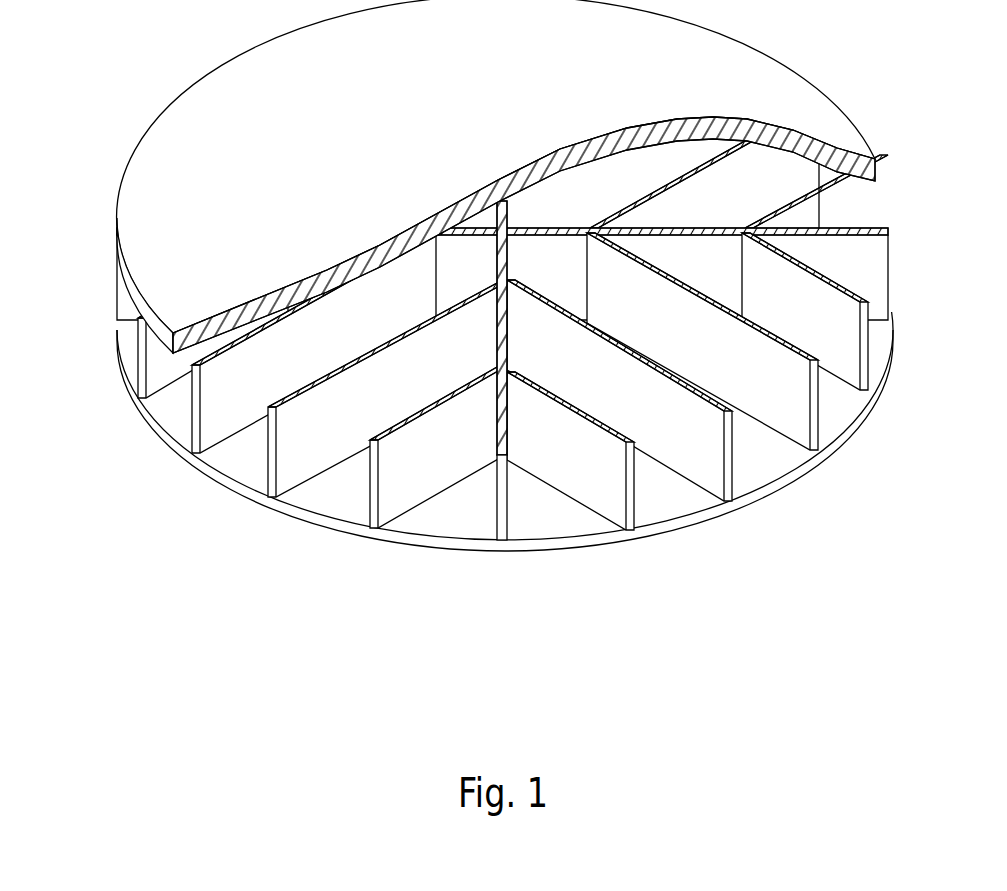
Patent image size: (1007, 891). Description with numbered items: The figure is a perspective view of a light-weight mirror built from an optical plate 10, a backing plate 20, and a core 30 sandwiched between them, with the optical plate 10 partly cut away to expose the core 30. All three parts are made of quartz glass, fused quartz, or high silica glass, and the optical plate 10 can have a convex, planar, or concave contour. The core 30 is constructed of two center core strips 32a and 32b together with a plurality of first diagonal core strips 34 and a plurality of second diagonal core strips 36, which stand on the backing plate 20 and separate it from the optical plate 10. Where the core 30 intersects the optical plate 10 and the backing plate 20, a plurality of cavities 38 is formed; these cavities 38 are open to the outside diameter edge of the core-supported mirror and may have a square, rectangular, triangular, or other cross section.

The optical plate 10 is at (278, 127).
The backing plate 20 is at (317, 522).
The core 30 is at (466, 366).
The center core strip 32a is at (502, 497).
The center core strip 32b is at (650, 247).
The first diagonal core strip 34 is at (705, 467).
The second diagonal core strip 36 is at (852, 355).
The cavity 38 is at (130, 347).